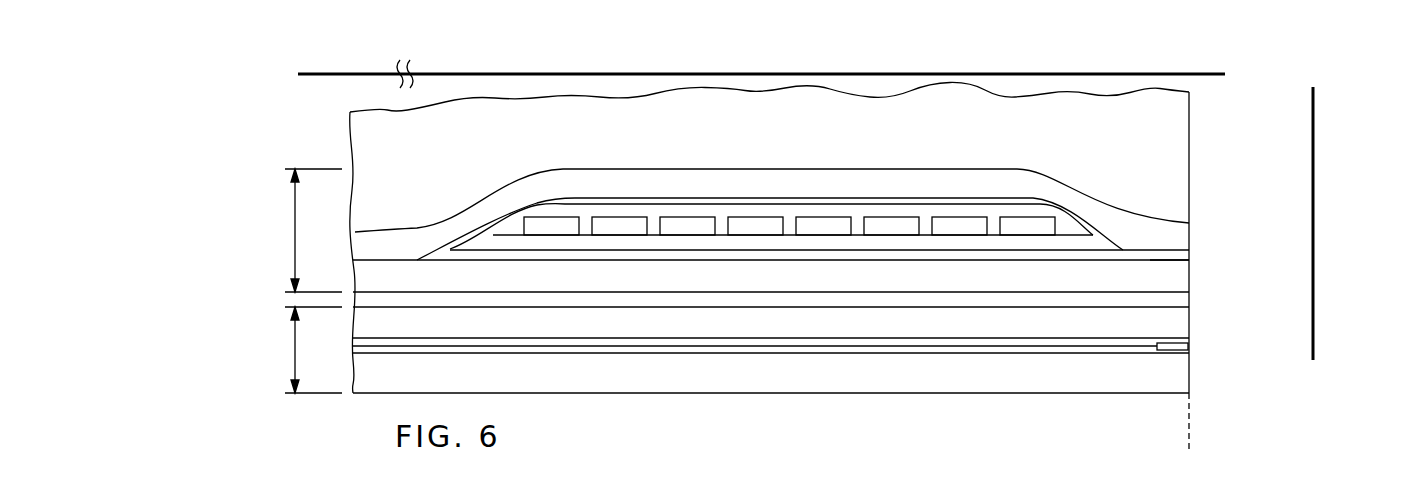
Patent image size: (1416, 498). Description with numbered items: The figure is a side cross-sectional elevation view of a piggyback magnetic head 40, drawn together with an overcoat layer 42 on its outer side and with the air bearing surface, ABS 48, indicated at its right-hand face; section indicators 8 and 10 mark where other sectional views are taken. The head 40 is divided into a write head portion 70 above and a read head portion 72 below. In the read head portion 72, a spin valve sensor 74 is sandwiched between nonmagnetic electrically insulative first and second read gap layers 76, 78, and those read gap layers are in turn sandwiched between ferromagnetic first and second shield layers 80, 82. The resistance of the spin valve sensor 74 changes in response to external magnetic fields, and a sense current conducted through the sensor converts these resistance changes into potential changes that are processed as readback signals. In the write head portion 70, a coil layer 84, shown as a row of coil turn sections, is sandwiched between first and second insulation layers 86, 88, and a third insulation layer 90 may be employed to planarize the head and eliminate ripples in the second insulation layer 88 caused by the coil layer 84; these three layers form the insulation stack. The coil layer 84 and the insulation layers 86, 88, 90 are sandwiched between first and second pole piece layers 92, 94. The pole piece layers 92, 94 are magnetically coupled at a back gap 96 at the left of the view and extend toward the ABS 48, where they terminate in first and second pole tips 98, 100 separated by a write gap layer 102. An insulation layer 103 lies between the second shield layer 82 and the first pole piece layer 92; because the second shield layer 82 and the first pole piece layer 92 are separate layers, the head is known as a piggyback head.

The section line 8- 8 is at (1313, 95).
The section line 10- 10 is at (307, 66).
The piggyback magnetic head 40 is at (333, 123).
The overcoat layer 42 is at (1173, 120).
The air bearing surface (ABS) 48 is at (1189, 447).
The write head portion 70 is at (293, 233).
The read head portion 72 is at (293, 355).
The spin valve sensor 74 is at (1189, 347).
The first read gap layer 76 is at (838, 355).
The second read gap layer 78 is at (803, 338).
The first shield layer 80 is at (945, 378).
The second shield layer 82 is at (1055, 325).
The coil layer 84 is at (822, 222).
The first insulation layer 86 is at (722, 243).
The second insulation layer 88 is at (1073, 222).
The third insulation layer 90 is at (592, 200).
The first pole piece layer 92 is at (1105, 280).
The second pole piece layer 94 is at (957, 182).
The back gap 96 is at (393, 260).
The first pole tip 98 is at (1189, 282).
The second pole tip 100 is at (1180, 233).
The write gap layer 102 is at (1189, 255).
The insulation layer 103 is at (1007, 300).